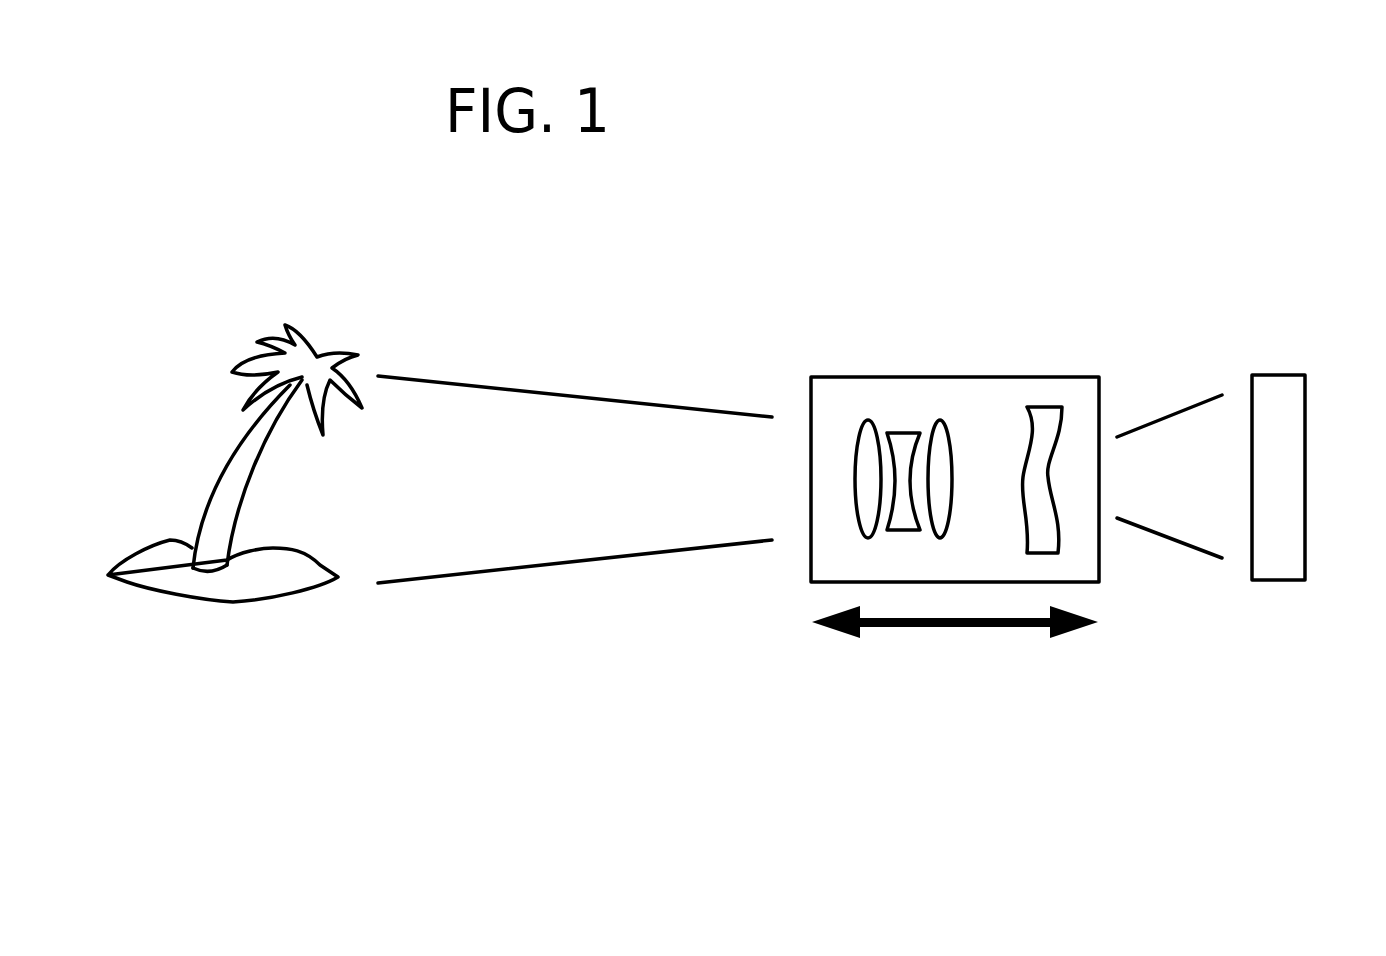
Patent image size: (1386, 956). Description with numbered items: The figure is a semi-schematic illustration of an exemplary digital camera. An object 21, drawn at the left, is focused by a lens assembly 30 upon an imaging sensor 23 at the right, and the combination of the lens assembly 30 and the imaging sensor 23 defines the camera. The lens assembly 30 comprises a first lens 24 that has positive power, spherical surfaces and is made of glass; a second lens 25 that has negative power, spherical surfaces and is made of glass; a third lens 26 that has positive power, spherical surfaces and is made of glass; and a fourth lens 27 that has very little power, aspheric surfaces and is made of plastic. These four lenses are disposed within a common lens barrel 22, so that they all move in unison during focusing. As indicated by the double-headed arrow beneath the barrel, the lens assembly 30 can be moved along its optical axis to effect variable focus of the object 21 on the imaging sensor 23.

The object 21 is at (225, 470).
The lens barrel 22 is at (1100, 393).
The imaging sensor 23 is at (1305, 413).
The first lens 24 is at (857, 448).
The second lens 25 is at (903, 432).
The third lens 26 is at (957, 448).
The fourth lens 27 is at (1030, 448).
The lens assembly 30 is at (988, 158).